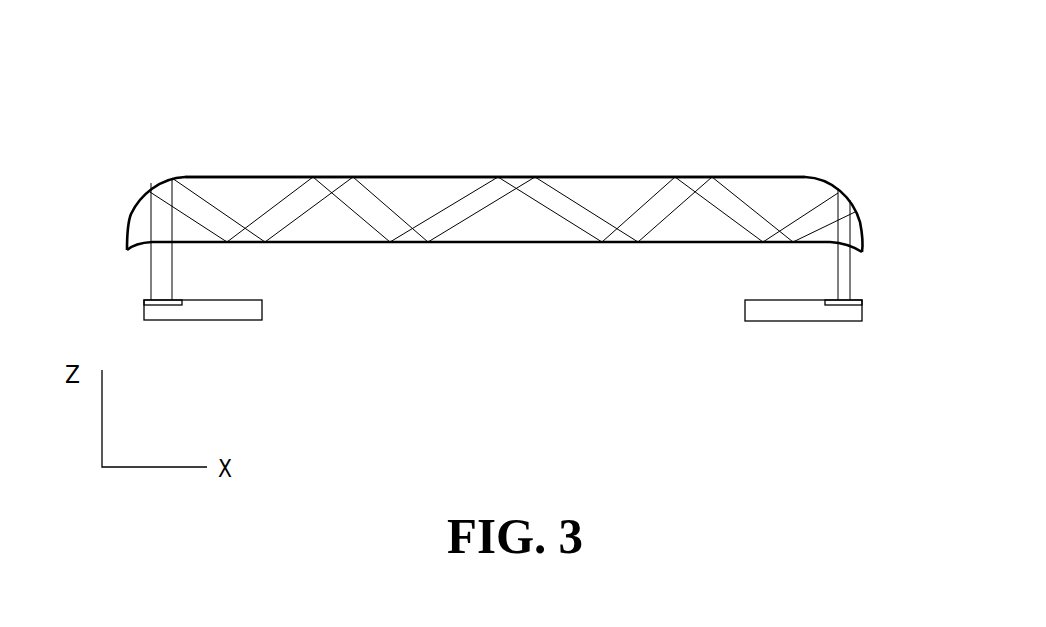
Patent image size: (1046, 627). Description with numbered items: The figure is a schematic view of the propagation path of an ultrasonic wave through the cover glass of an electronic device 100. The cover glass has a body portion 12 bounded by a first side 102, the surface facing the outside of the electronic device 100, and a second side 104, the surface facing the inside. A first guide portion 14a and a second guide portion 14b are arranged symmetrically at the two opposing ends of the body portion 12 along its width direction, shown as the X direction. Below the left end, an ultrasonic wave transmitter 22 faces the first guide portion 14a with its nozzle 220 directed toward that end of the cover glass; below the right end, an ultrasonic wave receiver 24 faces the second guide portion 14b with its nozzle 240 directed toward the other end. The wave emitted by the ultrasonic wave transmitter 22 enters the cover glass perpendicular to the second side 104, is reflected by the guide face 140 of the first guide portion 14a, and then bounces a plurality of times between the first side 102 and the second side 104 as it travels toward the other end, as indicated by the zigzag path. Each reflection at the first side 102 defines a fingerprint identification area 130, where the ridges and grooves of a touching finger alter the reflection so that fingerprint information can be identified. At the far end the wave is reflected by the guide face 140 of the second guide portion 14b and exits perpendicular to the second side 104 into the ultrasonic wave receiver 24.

The electronic device 100 is at (272, 102).
The first side 102 is at (585, 175).
The second side 104 is at (505, 243).
The body portion 12 is at (722, 196).
The fingerprint identification area 130 is at (330, 177).
The first guide portion 14a is at (142, 213).
The second guide portion 14b is at (855, 227).
The guide face 140 is at (127, 250).
The ultrasonic wave transmitter 22 is at (238, 312).
The nozzle 220 is at (158, 303).
The ultrasonic wave receiver 24 is at (755, 308).
The nozzle 240 is at (842, 307).